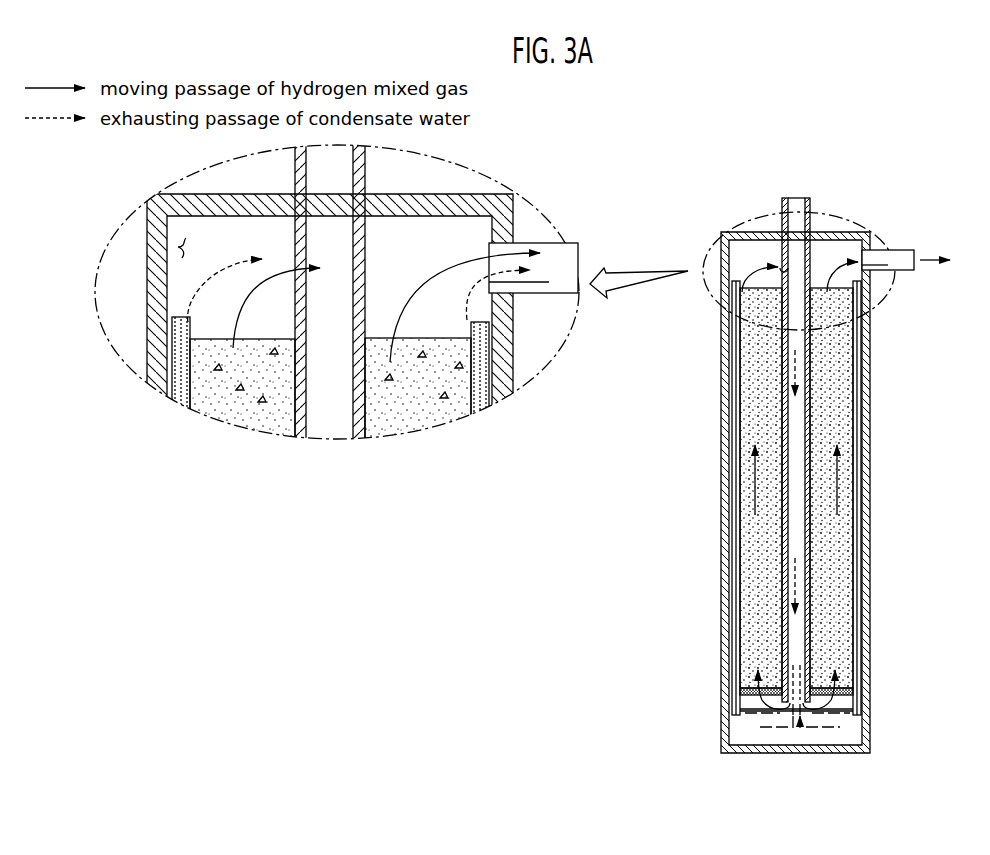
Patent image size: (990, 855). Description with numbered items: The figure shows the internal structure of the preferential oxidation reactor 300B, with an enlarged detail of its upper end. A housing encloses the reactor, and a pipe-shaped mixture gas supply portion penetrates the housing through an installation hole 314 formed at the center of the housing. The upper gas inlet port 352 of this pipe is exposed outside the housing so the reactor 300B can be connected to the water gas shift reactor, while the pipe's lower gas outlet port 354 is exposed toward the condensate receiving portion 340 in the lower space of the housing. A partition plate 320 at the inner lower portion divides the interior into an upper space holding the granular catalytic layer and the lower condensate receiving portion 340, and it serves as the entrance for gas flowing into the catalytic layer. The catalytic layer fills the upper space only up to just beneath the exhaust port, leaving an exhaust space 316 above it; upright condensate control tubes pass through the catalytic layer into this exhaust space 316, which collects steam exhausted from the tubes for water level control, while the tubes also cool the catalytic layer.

The preferential oxidation reactor 300B is at (805, 458).
The installation hole 314 is at (784, 243).
The exhaust space 316 is at (178, 247).
The partition plate 320 is at (745, 690).
The condensate receiving portion 340 is at (745, 730).
The upper gas inlet port 352 is at (800, 200).
The lower gas outlet port 354 is at (803, 713).